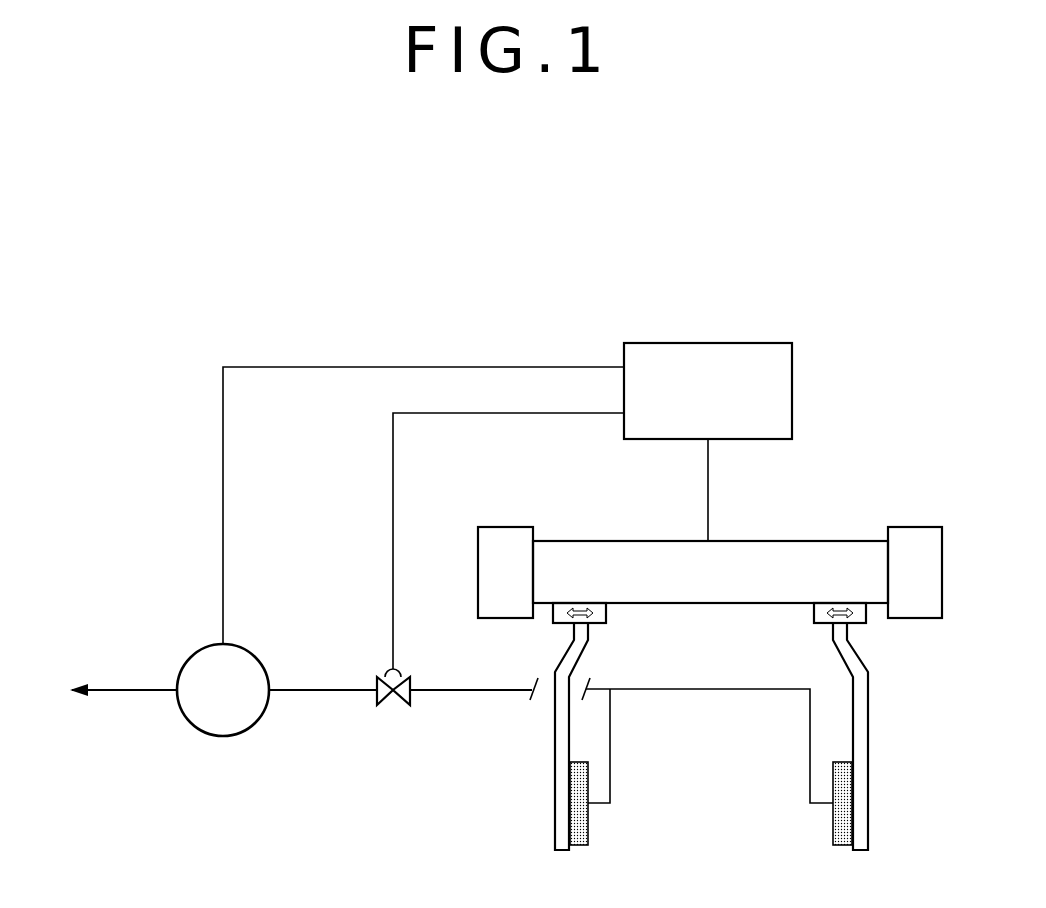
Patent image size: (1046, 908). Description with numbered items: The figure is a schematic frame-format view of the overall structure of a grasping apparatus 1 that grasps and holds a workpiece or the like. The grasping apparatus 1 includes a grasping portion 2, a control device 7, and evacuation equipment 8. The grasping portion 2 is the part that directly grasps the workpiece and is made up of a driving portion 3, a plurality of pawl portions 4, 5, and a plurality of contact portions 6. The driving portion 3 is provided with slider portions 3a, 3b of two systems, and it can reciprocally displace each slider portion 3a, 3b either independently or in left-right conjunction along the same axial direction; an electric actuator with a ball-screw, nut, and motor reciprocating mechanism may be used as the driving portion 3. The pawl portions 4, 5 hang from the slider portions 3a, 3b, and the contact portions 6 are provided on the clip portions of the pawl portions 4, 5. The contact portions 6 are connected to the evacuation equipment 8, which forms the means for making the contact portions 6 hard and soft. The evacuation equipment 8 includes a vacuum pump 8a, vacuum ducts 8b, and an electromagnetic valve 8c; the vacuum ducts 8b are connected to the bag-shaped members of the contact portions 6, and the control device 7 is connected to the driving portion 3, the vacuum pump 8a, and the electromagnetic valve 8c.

The grasping apparatus 1 is at (138, 288).
The grasping portion 2 is at (710, 534).
The driving portion 3 is at (592, 530).
The slider portion 3a is at (606, 610).
The slider portion 3b is at (814, 610).
The pawl portion 4 is at (528, 790).
The pawl portion 5 is at (882, 790).
The contact portion 6 is at (603, 825).
The control device 7 is at (792, 390).
The evacuation equipment 8 is at (451, 731).
The vacuum pump 8a is at (223, 737).
The vacuum duct 8b is at (610, 768).
The electromagnetic valve 8c is at (413, 682).